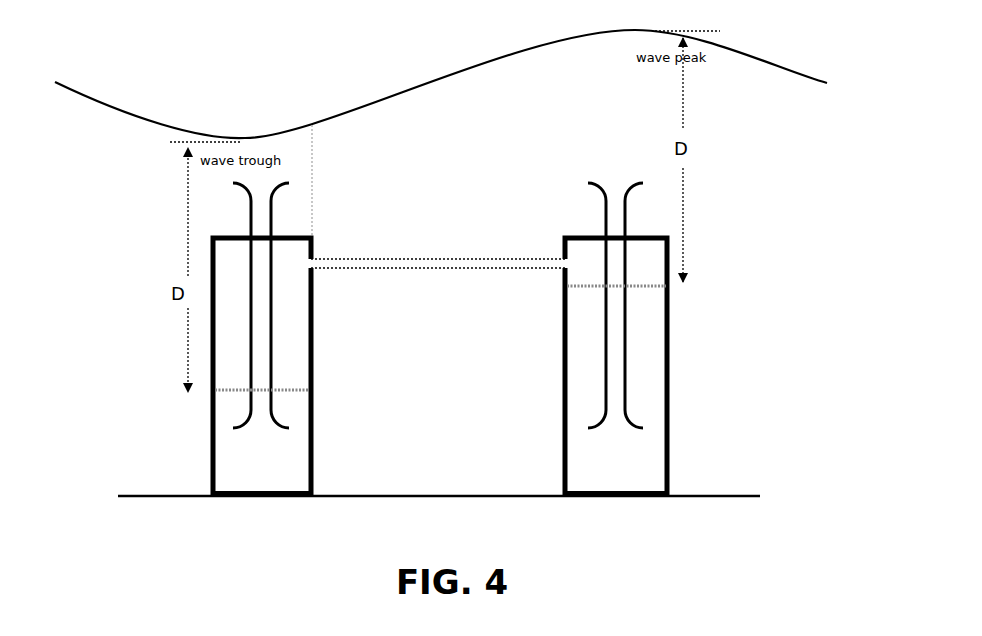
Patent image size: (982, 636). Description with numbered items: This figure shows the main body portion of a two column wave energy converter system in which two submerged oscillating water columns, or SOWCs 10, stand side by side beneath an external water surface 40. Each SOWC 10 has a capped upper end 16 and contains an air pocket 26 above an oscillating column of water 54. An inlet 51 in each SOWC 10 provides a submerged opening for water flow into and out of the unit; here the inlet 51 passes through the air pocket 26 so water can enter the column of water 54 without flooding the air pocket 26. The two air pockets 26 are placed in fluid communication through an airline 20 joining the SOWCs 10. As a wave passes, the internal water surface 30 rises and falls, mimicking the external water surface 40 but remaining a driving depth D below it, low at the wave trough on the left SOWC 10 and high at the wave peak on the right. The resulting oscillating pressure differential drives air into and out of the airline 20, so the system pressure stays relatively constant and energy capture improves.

The submerged oscillating water column (SOWC) 10 is at (141, 187).
The upper end 16 is at (313, 250).
The airline 20 is at (445, 271).
The air pocket 26 is at (288, 265).
The water surface within the SOWC 30 is at (202, 398).
The external water surface 40 is at (411, 94).
The inlet 51 is at (269, 216).
The oscillating column of water 54 is at (289, 451).